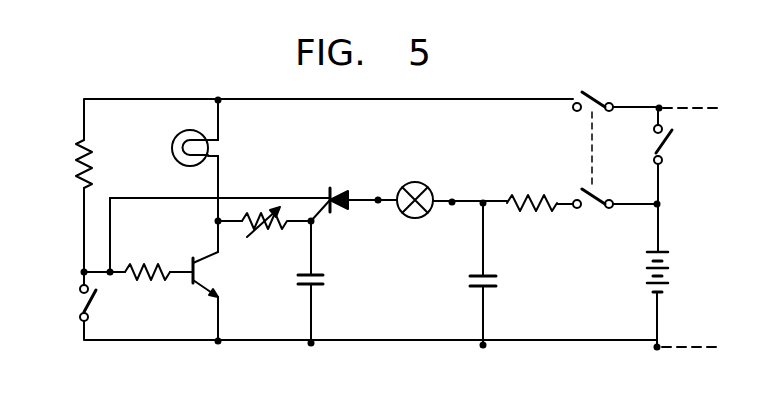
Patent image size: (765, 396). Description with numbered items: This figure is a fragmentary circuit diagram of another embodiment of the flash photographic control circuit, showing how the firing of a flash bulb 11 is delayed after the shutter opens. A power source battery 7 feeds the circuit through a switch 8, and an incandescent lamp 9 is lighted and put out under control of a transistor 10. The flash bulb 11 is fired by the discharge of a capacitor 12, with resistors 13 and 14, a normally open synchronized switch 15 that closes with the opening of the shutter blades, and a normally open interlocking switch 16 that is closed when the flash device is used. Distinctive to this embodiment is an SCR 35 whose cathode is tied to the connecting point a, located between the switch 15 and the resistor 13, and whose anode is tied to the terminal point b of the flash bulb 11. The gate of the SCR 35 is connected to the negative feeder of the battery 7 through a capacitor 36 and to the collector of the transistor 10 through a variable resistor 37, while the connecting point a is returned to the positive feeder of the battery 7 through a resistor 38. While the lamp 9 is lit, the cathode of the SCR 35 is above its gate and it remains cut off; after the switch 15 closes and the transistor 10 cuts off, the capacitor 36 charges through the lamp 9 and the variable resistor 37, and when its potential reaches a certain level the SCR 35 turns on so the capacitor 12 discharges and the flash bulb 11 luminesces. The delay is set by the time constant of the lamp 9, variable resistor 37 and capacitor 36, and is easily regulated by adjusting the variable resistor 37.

The power source battery 7 is at (647, 284).
The switch 8 is at (676, 139).
The incandescent lamp 9 is at (172, 148).
The transistor 10 is at (196, 271).
The flash bulb 11 is at (415, 182).
The capacitor 12 is at (497, 277).
The resistor 13 is at (147, 264).
The resistor 14 is at (532, 212).
The switch 15 is at (80, 310).
The interlocking switch 16 is at (590, 146).
The SCR 35 is at (330, 187).
The capacitor 36 is at (324, 276).
The variable resistor 37 is at (266, 228).
The resistor 38 is at (77, 151).
The connecting point a is at (80, 270).
The terminal point b is at (378, 197).